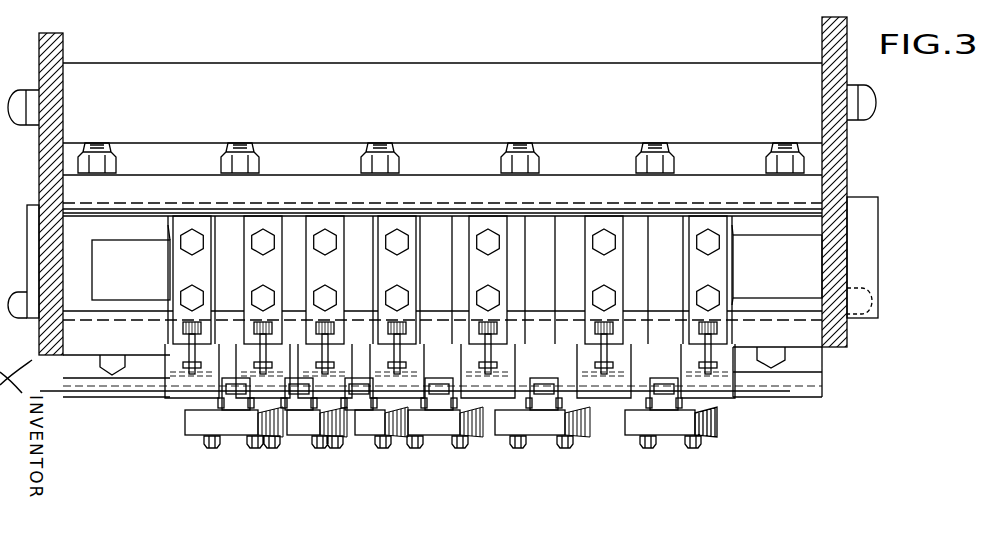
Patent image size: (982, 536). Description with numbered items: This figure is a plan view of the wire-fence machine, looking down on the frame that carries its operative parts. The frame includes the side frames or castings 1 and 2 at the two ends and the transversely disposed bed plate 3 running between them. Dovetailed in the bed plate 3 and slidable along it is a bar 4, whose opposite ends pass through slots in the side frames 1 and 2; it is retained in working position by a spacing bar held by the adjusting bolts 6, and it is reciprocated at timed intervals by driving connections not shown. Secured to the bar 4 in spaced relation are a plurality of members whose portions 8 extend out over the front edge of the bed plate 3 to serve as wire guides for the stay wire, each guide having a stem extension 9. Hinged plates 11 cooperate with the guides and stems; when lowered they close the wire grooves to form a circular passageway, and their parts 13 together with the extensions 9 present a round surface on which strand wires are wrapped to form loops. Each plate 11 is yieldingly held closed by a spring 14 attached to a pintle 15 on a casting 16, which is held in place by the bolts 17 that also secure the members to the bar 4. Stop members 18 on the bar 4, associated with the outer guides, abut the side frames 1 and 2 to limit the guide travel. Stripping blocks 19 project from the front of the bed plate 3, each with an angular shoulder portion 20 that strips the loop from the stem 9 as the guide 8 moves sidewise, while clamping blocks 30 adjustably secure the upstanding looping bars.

The side frame 1 is at (50, 155).
The side frame 2 is at (851, 151).
The bed plate 3 is at (443, 190).
The bar 4 is at (442, 306).
The adjusting bolts 6 is at (246, 143).
The wire guide 8 is at (488, 430).
The stem extension 9 is at (291, 378).
The hinged plate 11 is at (450, 371).
The plate part 13 is at (434, 380).
The spring 14 is at (493, 350).
The pintle 15 is at (210, 326).
The casting 16 is at (450, 280).
The bolt 17 is at (450, 270).
The stop member 18 is at (457, 265).
The stripping block 19 is at (652, 384).
The angular shoulder portion 20 is at (646, 410).
The clamping block 30 is at (553, 426).